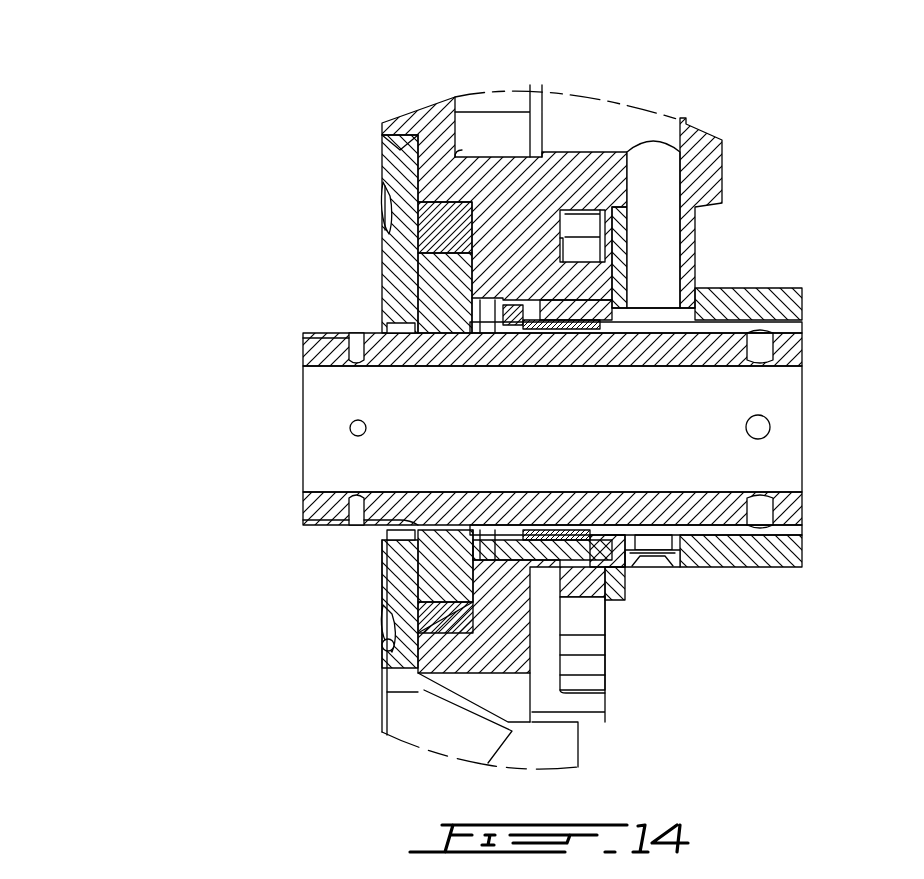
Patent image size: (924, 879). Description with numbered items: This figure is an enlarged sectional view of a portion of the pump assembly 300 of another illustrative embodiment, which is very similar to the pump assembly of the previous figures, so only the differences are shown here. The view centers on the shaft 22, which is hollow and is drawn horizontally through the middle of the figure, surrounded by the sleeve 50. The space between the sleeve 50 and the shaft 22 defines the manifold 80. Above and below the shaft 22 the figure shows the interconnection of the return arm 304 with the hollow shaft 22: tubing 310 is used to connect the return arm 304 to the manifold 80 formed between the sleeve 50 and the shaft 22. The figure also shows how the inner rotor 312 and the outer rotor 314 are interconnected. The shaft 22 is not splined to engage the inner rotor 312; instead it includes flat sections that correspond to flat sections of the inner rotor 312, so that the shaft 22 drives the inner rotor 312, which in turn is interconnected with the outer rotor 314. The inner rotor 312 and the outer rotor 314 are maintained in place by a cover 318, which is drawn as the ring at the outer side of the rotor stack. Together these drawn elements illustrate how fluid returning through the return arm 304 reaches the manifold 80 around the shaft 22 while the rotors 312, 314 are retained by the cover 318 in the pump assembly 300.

The pump assembly 300 is at (215, 238).
The return arm 304 is at (438, 133).
The cover 318 is at (402, 148).
The outer rotor 314 is at (450, 233).
The inner rotor 312 is at (437, 291).
The tubing 310 is at (693, 248).
The sleeve 50 is at (793, 305).
The manifold 80 is at (790, 323).
The shaft 22 is at (792, 352).